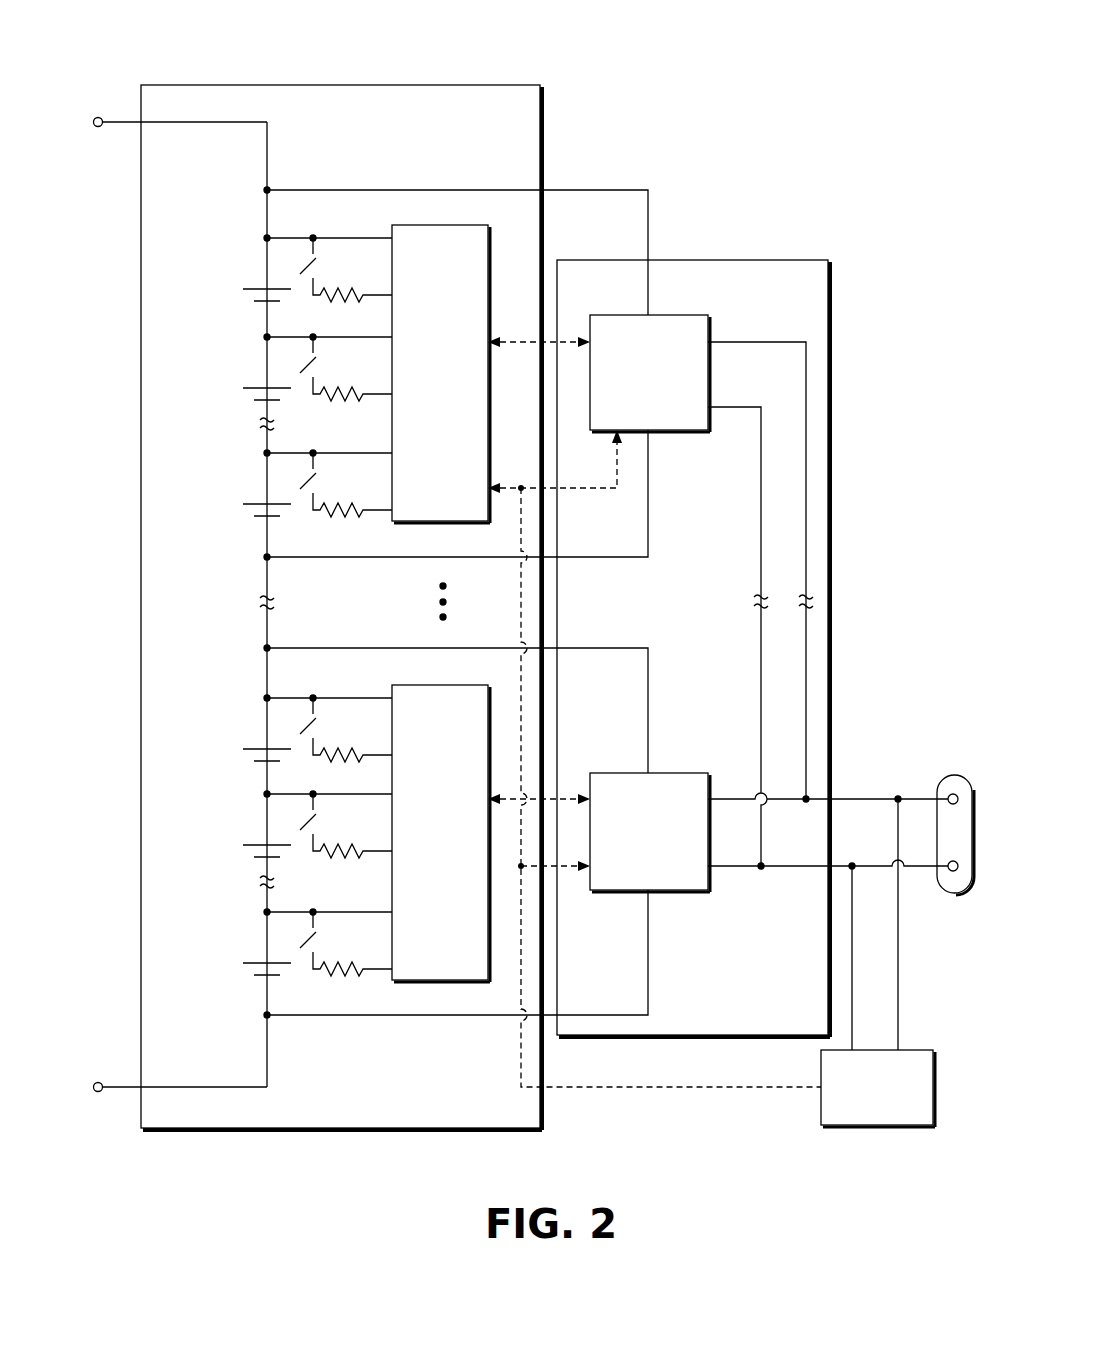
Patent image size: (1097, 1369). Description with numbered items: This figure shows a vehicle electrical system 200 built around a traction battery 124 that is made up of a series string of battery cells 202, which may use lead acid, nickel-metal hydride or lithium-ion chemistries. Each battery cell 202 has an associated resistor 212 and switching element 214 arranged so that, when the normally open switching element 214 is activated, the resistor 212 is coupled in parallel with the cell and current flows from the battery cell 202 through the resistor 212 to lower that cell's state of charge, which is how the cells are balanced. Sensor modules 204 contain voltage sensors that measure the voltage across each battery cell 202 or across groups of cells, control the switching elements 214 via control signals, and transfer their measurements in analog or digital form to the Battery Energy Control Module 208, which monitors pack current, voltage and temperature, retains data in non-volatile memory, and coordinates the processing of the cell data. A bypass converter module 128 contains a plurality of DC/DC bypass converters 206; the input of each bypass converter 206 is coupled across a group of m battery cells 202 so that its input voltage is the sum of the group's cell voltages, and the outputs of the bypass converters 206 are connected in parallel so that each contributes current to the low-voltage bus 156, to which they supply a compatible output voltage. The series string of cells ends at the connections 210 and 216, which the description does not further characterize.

The vehicle electrical system 200 is at (726, 84).
The traction battery 124 is at (340, 85).
The bypass converter module 128 is at (693, 260).
The battery cell 202 is at (257, 288).
The sensor module 204 is at (465, 225).
The DC/DC bypass converter 206 is at (668, 315).
The Battery Energy Control Module (BECM) 208 is at (910, 1050).
The positive high-voltage terminal 210 is at (94, 118).
The resistor 212 is at (343, 302).
The switching element 214 is at (315, 266).
The negative high-voltage terminal 216 is at (96, 1092).
The low-voltage bus 156 is at (953, 775).